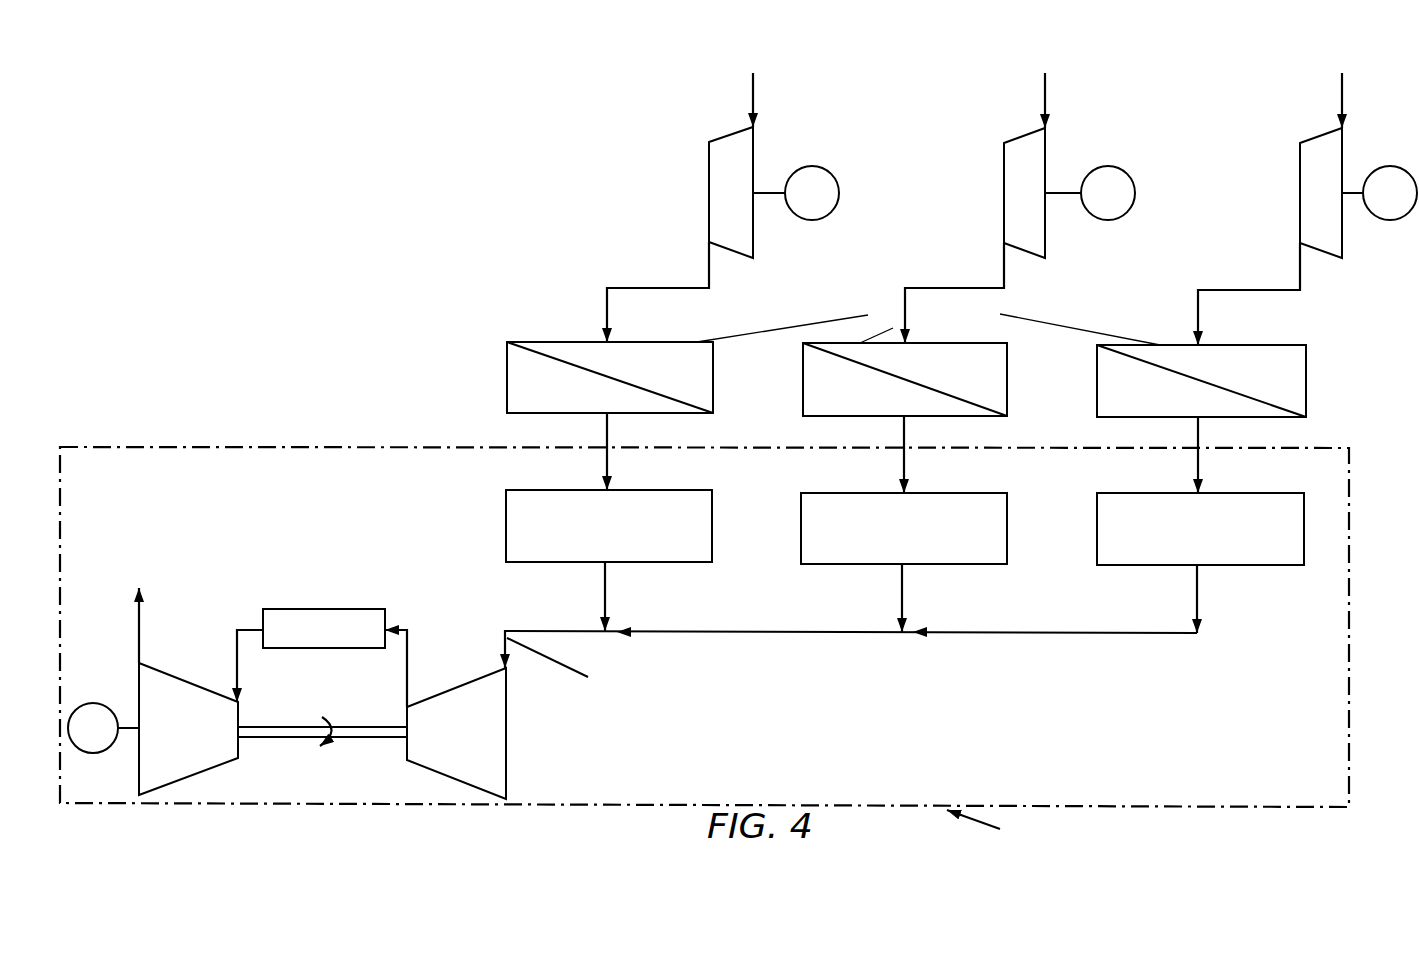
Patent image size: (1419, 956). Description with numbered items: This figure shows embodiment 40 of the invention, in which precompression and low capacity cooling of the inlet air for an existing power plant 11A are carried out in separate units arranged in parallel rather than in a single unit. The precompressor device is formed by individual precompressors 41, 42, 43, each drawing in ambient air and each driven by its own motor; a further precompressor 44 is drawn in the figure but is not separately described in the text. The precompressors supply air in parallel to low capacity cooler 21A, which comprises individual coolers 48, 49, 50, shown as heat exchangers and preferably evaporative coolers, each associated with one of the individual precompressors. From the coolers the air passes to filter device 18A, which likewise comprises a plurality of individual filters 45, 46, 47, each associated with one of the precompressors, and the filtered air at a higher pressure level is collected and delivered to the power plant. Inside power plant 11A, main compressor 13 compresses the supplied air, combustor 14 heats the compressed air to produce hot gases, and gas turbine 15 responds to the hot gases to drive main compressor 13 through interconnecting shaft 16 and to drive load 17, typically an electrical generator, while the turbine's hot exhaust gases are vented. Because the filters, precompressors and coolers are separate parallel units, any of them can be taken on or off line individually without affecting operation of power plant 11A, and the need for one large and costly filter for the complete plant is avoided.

The embodiment 40 is at (378, 99).
The precompressor 41 is at (660, 122).
The precompressor 42 is at (737, 128).
The precompressor 43 is at (1032, 129).
The pre-compressor 44 is at (1327, 129).
The low capacity cooler 21A is at (446, 359).
The cooler 48 is at (713, 368).
The cooler 49 is at (1007, 368).
The cooler 50 is at (1306, 370).
The power plant 11A is at (1349, 632).
The filter device 18A is at (446, 527).
The filter 45 is at (712, 516).
The filter 46 is at (1007, 517).
The filter 47 is at (1304, 521).
The main compressor 13 is at (506, 717).
The combustor 14 is at (328, 609).
The gas turbine 15 is at (239, 714).
The interconnecting shaft 16 is at (272, 738).
The load 17 is at (94, 753).